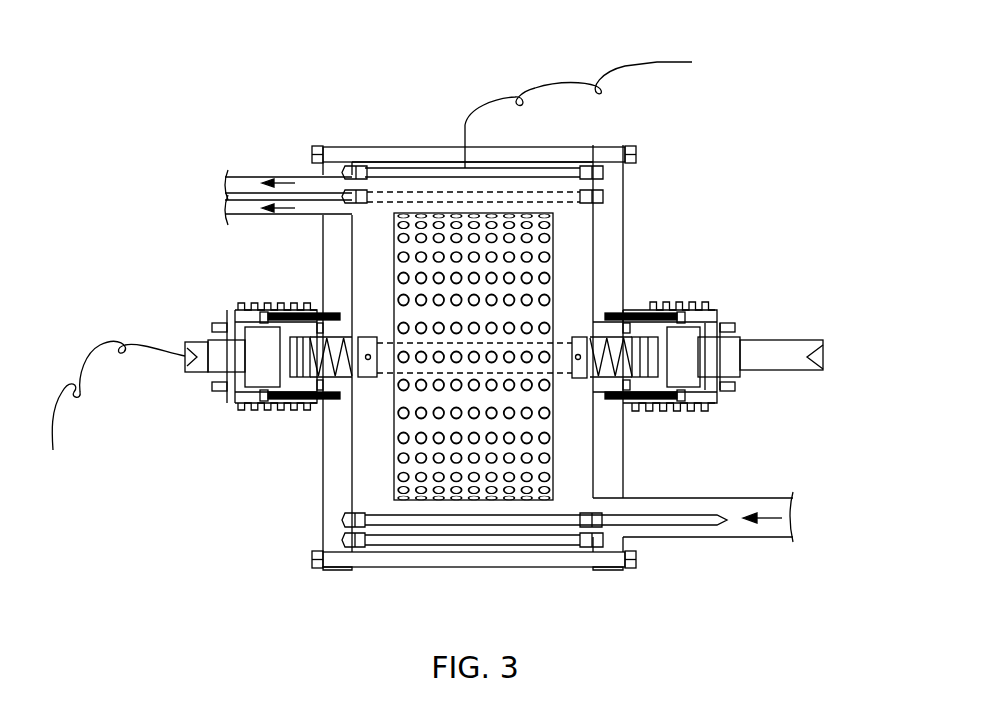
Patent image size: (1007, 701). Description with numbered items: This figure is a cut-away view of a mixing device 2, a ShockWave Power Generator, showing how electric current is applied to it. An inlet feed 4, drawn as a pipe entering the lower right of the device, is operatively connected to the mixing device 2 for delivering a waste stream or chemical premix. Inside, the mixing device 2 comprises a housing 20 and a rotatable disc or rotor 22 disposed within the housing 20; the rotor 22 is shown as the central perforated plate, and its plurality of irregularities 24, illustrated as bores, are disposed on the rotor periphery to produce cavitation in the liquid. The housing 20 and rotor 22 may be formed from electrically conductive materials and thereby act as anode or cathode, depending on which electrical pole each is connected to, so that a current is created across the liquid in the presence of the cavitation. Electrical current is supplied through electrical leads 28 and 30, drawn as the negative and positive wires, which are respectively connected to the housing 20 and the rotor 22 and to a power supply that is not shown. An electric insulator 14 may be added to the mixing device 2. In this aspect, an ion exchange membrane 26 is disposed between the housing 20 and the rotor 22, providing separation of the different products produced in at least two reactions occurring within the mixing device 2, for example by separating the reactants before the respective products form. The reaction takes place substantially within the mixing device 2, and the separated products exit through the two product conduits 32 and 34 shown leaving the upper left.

The mixing device 2 is at (682, 164).
The inlet feed 4 is at (750, 498).
The electric insulator 14 is at (358, 153).
The housing 20 is at (525, 177).
The rotor 22 is at (400, 467).
The irregularities 24 is at (402, 438).
The ion exchange membrane 26 is at (575, 202).
The electrical lead 28 is at (655, 62).
The electrical lead 30 is at (56, 428).
The product conduit 32 is at (252, 177).
The product conduit 34 is at (253, 211).